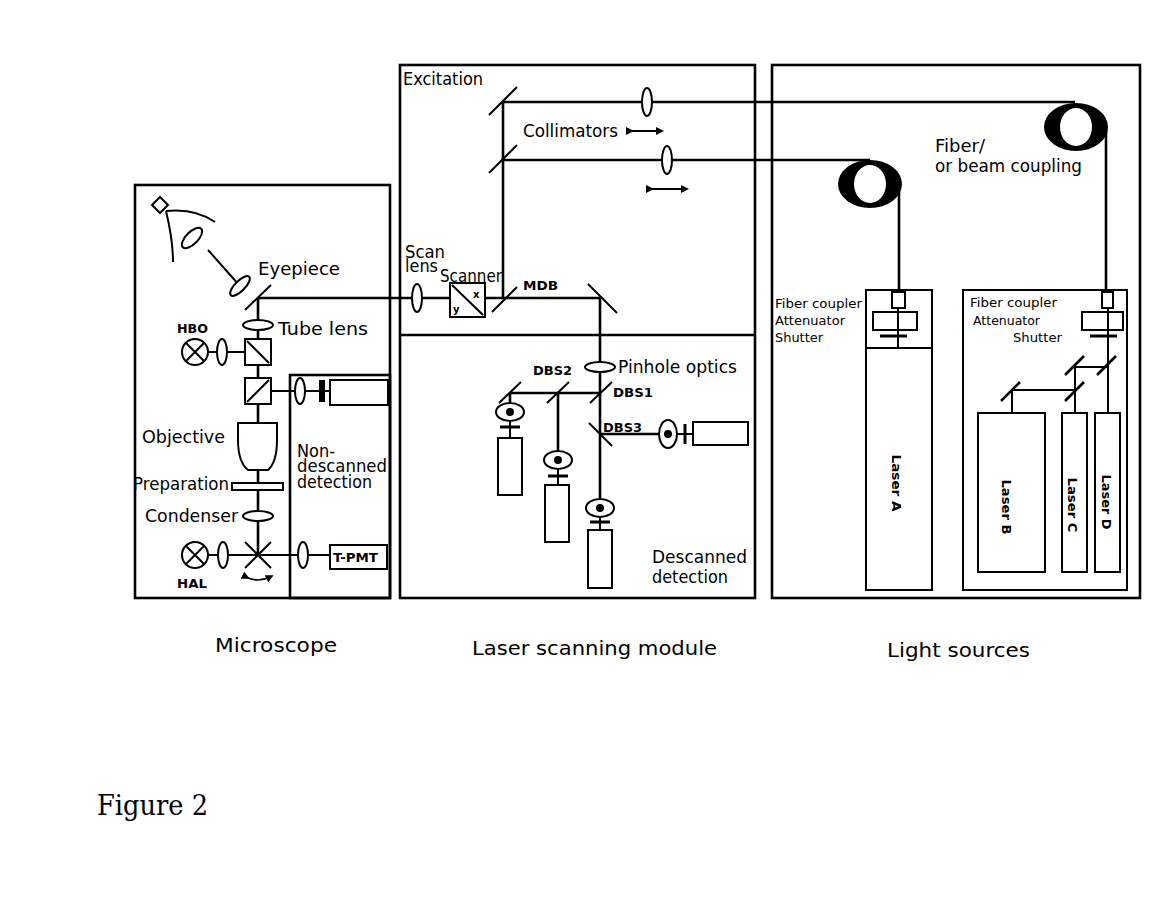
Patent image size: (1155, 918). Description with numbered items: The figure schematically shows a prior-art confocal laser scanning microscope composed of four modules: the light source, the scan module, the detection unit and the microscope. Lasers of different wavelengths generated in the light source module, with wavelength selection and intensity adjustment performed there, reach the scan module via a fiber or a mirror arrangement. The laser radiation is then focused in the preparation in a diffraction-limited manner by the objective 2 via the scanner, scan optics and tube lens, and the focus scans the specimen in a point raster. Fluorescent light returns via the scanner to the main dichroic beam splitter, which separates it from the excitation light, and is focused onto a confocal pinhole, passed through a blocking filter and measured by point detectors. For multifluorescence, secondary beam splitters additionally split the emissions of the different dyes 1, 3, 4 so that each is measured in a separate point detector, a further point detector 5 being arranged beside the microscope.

The dye 1 is at (616, 543).
The objective 2 is at (570, 496).
The dye 3 is at (524, 449).
The dye 4 is at (701, 451).
The non-descanned detection channel 5 (emission filter EF5, photomultiplier PMT 5) 5 is at (329, 401).